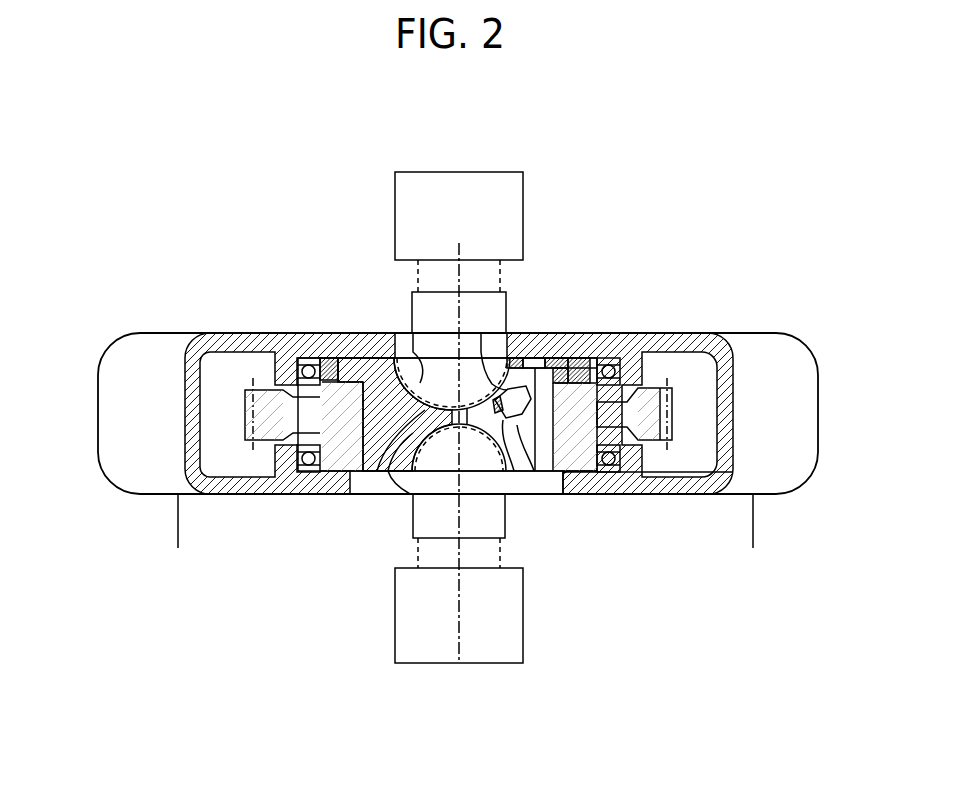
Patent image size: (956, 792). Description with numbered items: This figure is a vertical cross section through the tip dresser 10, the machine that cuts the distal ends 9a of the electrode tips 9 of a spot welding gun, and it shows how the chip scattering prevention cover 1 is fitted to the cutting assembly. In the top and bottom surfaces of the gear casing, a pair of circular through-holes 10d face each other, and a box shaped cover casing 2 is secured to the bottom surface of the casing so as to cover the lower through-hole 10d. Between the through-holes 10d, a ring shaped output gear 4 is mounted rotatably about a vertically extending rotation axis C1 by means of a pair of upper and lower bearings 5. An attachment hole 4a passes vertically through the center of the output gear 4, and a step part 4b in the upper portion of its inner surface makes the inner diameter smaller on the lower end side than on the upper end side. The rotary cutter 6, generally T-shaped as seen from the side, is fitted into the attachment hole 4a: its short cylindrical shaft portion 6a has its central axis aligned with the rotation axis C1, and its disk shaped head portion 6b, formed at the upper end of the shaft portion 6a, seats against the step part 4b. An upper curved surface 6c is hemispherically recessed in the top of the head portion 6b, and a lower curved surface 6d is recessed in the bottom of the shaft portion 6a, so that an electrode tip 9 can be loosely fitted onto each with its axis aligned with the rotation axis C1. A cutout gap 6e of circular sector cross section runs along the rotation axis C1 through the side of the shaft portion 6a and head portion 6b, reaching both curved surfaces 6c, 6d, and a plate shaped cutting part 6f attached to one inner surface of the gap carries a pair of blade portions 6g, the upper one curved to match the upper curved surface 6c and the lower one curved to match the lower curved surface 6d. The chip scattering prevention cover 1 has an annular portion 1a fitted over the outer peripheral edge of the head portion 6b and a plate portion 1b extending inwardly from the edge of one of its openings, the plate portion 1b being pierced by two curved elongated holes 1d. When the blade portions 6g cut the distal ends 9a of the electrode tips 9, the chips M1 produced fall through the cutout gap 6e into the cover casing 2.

The tip dresser 10 is at (716, 176).
The cover casing 2 is at (760, 516).
The chip scattering prevention cover 1 is at (583, 335).
The annular portion 1a is at (322, 335).
The plate portion 1b is at (548, 335).
The elongated holes 1d is at (572, 368).
The through-holes 10d is at (578, 336).
The output gear 4 is at (682, 415).
The attachment hole 4a is at (250, 382).
The step part 4b is at (348, 335).
The bearings 5 is at (624, 366).
The rotary cutter 6 is at (366, 335).
The shaft portion 6a is at (386, 420).
The head portion 6b is at (344, 335).
The upper curved surface 6c is at (459, 313).
The lower curved surface 6d is at (410, 495).
The cutout gap 6e is at (541, 472).
The cutting part 6f is at (503, 420).
The blade portions 6g is at (459, 455).
The electrode tips 9 is at (512, 300).
The distal ends 9a is at (375, 334).
The rotation axis C1 is at (458, 254).
The chips M1 is at (523, 405).